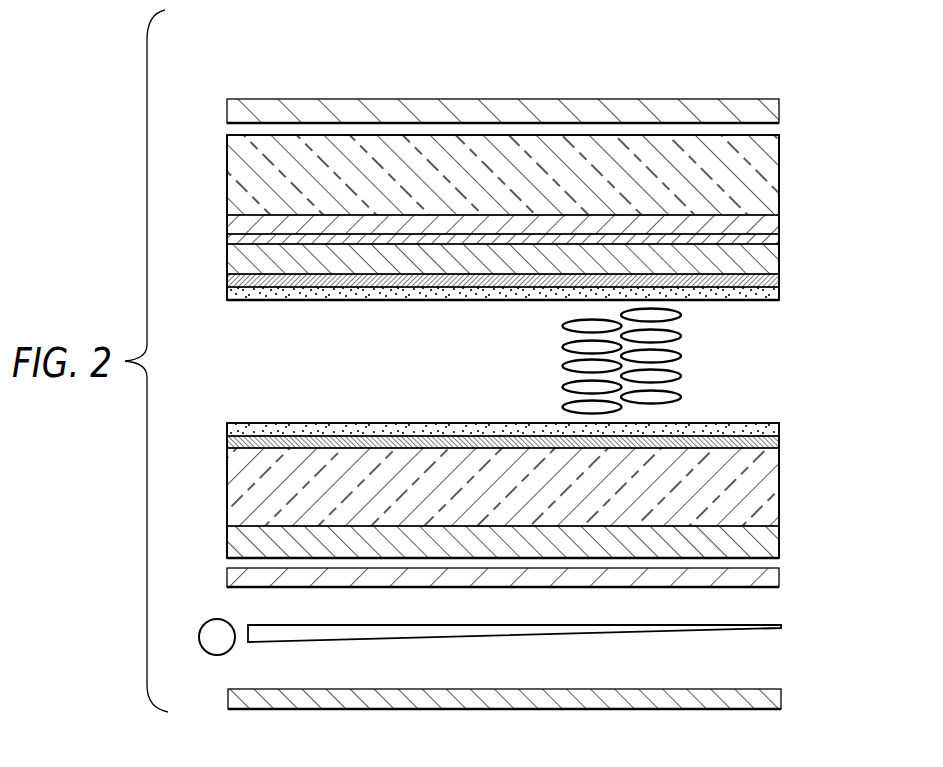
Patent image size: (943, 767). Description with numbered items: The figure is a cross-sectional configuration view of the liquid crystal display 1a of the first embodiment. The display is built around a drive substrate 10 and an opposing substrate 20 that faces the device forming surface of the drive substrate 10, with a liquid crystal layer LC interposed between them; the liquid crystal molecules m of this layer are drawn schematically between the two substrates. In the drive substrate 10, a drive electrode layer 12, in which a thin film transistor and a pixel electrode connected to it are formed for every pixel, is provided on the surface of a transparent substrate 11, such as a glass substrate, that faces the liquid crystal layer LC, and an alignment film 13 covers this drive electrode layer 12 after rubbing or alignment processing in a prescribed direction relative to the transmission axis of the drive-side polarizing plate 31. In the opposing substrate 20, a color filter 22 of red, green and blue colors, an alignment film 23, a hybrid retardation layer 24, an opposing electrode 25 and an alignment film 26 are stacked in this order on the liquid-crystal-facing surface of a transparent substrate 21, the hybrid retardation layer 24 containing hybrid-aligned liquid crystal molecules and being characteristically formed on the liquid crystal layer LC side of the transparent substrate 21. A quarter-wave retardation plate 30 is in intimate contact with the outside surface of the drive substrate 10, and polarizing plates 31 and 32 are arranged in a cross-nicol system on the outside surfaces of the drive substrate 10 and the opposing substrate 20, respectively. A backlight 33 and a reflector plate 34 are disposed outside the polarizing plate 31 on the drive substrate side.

The liquid crystal display 1a is at (268, 64).
The drive substrate 10 is at (826, 505).
The transparent substrate 11 is at (779, 480).
The drive electrode layer 12 is at (779, 441).
The alignment film 13 is at (779, 428).
The opposing substrate 20 is at (825, 145).
The transparent substrate 21 is at (779, 173).
The color filter 22 is at (779, 220).
The alignment film 23 is at (779, 238).
The hybrid retardation layer 24 is at (779, 252).
The opposing electrode 25 is at (779, 278).
The alignment film 26 is at (779, 292).
The λ/4 retardation plate 30 is at (779, 535).
The polarizing plate 31 is at (779, 575).
The polarizing plate 32 is at (779, 112).
The backlight 33 is at (656, 630).
The reflector plate 34 is at (781, 697).
The liquid crystal layer LC is at (624, 361).
The liquid crystal molecule m is at (562, 387).